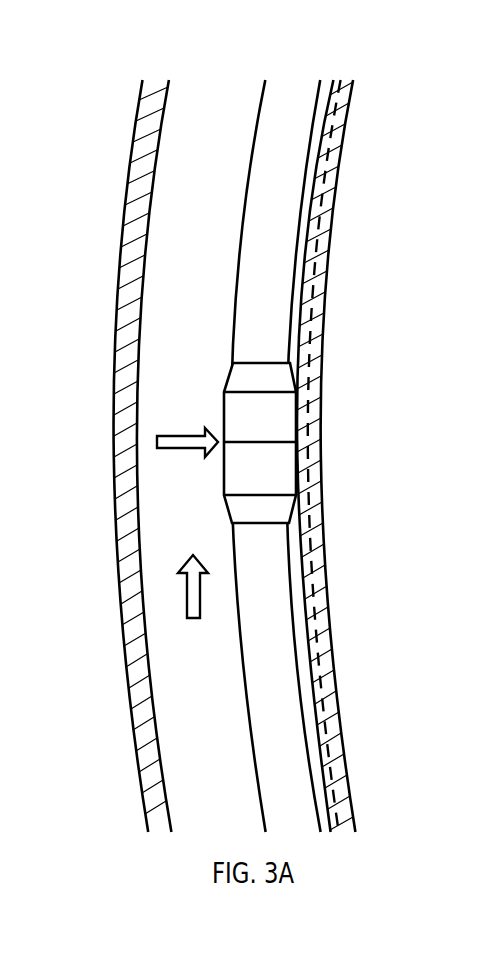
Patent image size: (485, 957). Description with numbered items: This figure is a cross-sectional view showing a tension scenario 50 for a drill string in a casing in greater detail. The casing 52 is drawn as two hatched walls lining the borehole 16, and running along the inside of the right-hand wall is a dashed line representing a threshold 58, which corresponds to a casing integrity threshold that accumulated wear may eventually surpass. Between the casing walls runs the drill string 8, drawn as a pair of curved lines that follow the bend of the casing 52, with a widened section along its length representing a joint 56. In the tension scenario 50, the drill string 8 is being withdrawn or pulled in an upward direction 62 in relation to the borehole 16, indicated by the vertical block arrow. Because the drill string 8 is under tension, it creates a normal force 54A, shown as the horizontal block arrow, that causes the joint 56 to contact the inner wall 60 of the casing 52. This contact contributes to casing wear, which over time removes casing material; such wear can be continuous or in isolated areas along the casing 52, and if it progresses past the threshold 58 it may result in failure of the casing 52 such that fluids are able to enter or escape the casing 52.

The tension scenario 50 is at (216, 427).
The casing 52 is at (128, 182).
The inner wall 60 is at (325, 110).
The threshold 58 is at (315, 273).
The drill string 8 is at (267, 192).
The joint 56 is at (260, 413).
The borehole 16 is at (195, 333).
The normal force 54A is at (152, 440).
The upward direction 62 is at (182, 578).